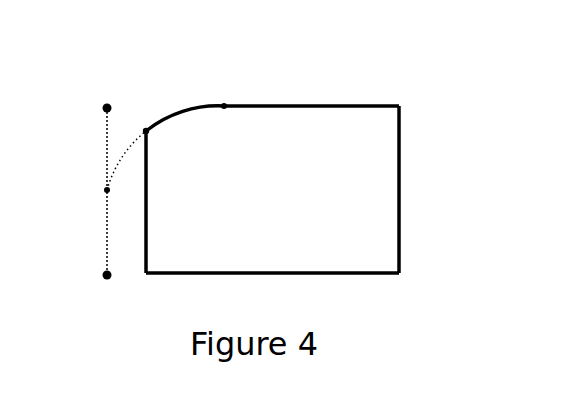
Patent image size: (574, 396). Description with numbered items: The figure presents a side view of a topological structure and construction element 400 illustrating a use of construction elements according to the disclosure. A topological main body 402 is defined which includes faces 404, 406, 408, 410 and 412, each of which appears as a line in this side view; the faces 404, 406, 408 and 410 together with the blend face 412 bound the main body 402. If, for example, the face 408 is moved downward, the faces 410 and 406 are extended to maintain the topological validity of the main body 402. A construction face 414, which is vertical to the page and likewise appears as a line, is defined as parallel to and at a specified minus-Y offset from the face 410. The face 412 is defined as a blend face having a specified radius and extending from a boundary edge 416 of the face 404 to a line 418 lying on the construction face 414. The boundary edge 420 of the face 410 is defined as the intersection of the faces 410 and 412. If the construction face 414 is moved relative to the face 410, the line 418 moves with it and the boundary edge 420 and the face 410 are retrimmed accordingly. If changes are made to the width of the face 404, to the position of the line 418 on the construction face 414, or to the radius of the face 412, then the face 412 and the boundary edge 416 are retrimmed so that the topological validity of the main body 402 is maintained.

The cell structure / layout diagram 400 is at (460, 57).
The topological main body 402 is at (250, 208).
The face 404 is at (316, 104).
The face 406 is at (401, 200).
The face 408 is at (288, 274).
The face 410 is at (148, 237).
The blend face 412 is at (170, 115).
The construction face 414 is at (105, 143).
The boundary edge 416 is at (225, 104).
The line 418 is at (105, 190).
The boundary edge 420 is at (144, 128).